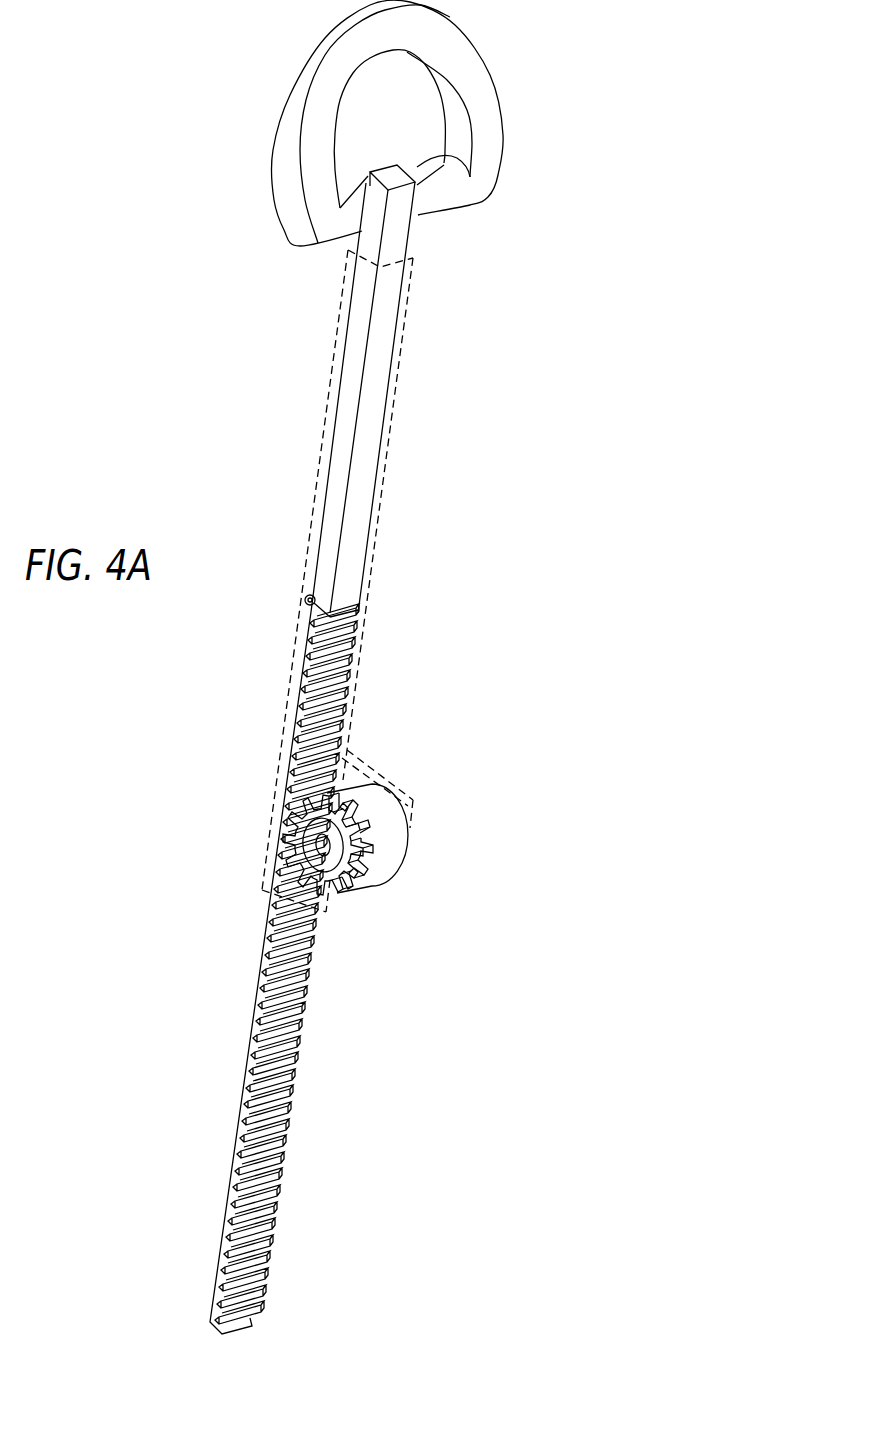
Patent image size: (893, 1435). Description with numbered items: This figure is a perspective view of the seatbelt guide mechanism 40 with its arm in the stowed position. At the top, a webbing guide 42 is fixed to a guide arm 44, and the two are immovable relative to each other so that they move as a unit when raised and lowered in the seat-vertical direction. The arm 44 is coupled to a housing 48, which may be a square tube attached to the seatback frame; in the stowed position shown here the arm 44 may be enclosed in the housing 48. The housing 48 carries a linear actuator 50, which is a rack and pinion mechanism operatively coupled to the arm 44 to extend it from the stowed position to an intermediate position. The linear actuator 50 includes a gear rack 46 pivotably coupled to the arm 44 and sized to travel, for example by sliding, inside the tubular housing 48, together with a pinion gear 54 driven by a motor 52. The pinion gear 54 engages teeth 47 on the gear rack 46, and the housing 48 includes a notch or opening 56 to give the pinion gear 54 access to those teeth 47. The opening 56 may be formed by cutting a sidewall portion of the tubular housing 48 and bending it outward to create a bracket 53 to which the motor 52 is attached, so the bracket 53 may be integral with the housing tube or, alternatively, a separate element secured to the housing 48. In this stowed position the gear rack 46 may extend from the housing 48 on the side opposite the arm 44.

The seatbelt guide mechanism 40 is at (203, 377).
The webbing guide 42 is at (497, 90).
The guide arm 44 is at (410, 232).
The gear rack 46 is at (240, 1098).
The teeth 47 is at (304, 1040).
The housing 48 is at (392, 422).
The linear actuator 50 is at (437, 849).
The motor 52 is at (398, 870).
The bracket 53 is at (398, 782).
The pinion gear 54 is at (340, 888).
The opening 56 is at (298, 822).